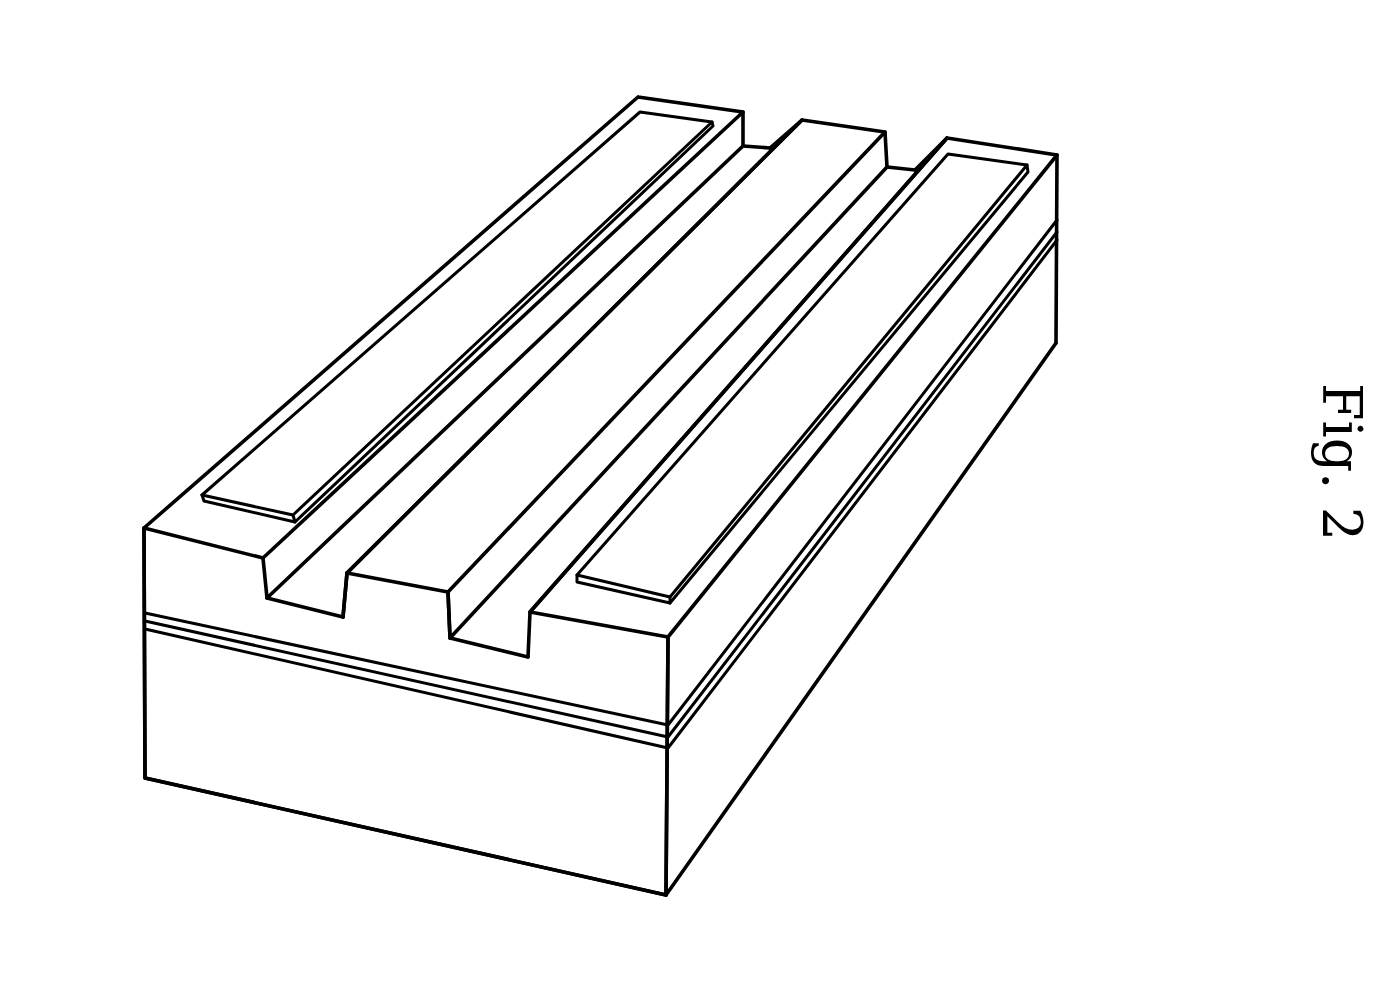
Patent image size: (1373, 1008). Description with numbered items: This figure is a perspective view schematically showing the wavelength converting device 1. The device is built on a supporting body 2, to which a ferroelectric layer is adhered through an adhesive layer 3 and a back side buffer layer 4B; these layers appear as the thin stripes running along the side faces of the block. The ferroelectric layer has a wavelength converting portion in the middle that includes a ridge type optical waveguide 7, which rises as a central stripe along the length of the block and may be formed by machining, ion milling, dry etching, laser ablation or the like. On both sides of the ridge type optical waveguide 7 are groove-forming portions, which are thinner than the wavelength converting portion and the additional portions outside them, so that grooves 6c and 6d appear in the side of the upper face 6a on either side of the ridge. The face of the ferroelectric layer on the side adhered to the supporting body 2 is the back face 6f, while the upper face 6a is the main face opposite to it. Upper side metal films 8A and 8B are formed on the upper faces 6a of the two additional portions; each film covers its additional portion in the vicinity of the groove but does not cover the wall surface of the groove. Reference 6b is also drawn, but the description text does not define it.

The wavelength converting device 1 is at (1062, 130).
The supporting body 2 is at (1045, 322).
The adhesive layer 3 is at (1057, 240).
The back side buffer layer 4B is at (1057, 223).
The upper face 6a is at (702, 105).
The right groove outer side wall 6b is at (1002, 150).
The groove 6c is at (767, 135).
The groove 6d is at (907, 160).
The back face 6f is at (592, 712).
The ridge type optical waveguide 7 is at (846, 118).
The upper side metal film 8A is at (603, 163).
The upper side metal film 8B is at (960, 163).